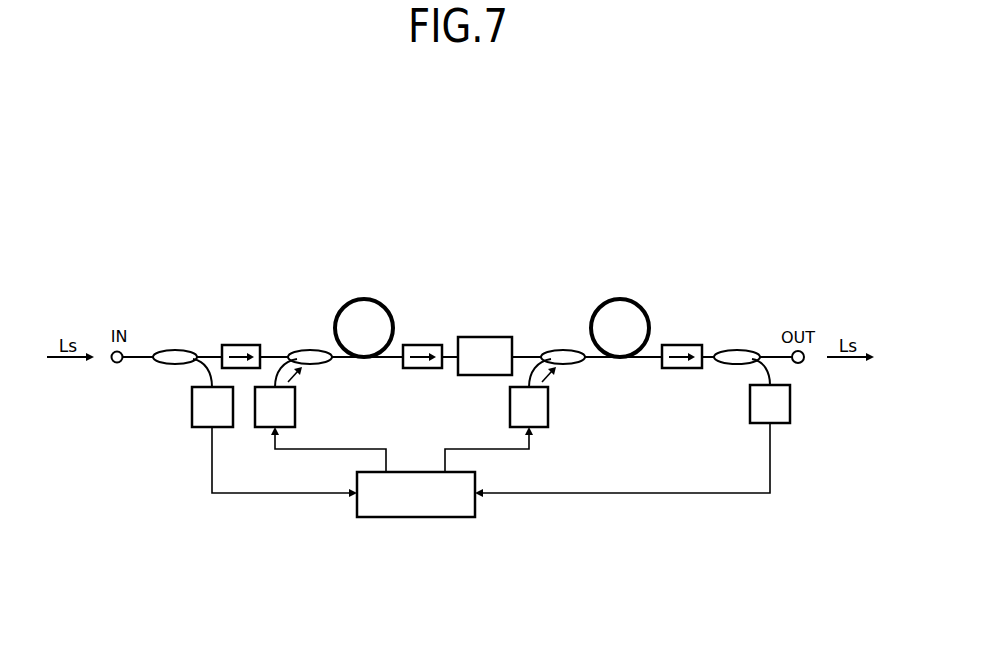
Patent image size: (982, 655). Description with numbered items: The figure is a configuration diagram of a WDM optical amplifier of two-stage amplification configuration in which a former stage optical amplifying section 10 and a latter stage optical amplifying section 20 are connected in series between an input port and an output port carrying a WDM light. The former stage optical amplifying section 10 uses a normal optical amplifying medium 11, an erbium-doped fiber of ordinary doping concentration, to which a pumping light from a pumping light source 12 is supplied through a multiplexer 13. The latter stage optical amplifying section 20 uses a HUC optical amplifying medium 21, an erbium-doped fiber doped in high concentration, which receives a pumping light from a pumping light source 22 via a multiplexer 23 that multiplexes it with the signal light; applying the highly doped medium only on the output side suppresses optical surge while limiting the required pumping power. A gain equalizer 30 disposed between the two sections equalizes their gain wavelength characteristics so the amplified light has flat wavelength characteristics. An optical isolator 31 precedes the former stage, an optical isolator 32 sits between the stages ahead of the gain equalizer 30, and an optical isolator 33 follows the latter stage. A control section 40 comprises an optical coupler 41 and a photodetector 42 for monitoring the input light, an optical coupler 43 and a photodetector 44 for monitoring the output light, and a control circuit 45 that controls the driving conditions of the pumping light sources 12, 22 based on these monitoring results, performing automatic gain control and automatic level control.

The former stage optical amplifying section 10 is at (291, 253).
The optical amplifying medium 11 is at (378, 300).
The pumping light source 12 is at (257, 430).
The multiplexer 13 is at (305, 350).
The latter stage optical amplifying section 20 is at (565, 253).
The HUC optical amplifying medium 21 is at (640, 300).
The pumping light source 22 is at (548, 430).
The multiplexer 23 is at (558, 350).
The gain equalizer 30 is at (490, 337).
The optical isolator 31 is at (237, 345).
The optical isolator 32 is at (432, 345).
The optical isolator 33 is at (688, 345).
The control section 40 is at (345, 541).
The optical coupler 41 is at (172, 350).
The photodetector 42 is at (193, 430).
The optical coupler 43 is at (742, 350).
The photodetector 44 is at (782, 426).
The control circuit 45 is at (426, 518).